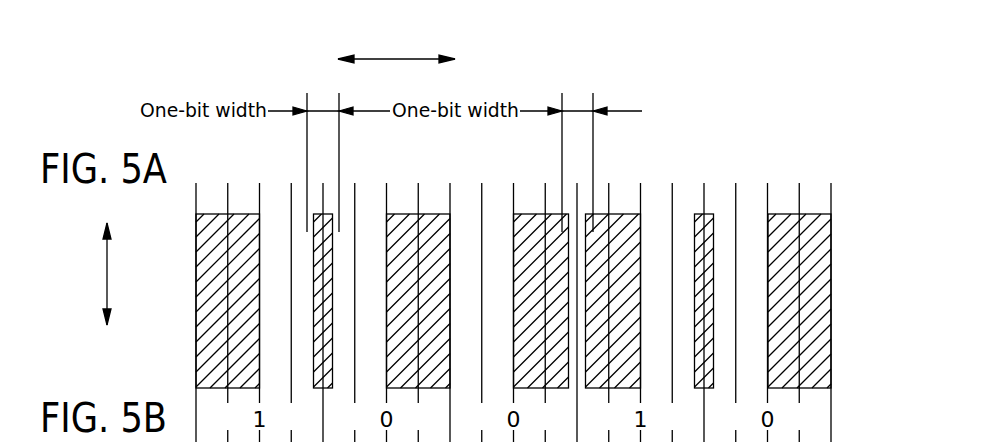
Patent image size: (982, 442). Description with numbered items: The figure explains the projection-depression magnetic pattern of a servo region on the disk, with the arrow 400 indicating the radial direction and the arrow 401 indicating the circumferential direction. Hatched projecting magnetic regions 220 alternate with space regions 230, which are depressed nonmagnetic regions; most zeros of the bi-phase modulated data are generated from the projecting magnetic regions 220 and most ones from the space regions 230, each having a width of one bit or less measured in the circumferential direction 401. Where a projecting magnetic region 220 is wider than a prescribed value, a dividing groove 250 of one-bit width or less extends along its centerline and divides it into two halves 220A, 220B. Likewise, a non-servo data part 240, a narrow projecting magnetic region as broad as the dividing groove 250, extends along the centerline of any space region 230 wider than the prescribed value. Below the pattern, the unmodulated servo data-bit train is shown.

The projecting magnetic region 220 is at (196, 216).
The first half of the projecting magnetic region 220A is at (532, 213).
The second half of the projecting magnetic region 220B is at (636, 213).
The space region 230 is at (273, 194).
The non-servo data part 240 is at (324, 213).
The dividing groove 250 is at (573, 213).
The radial direction 400 is at (110, 279).
The circumferential direction 401 is at (398, 58).